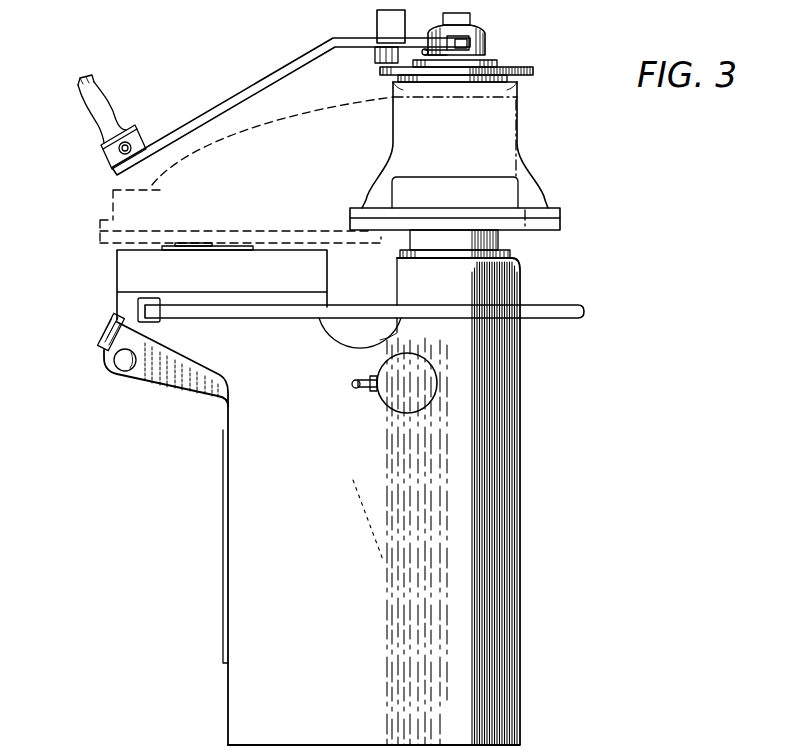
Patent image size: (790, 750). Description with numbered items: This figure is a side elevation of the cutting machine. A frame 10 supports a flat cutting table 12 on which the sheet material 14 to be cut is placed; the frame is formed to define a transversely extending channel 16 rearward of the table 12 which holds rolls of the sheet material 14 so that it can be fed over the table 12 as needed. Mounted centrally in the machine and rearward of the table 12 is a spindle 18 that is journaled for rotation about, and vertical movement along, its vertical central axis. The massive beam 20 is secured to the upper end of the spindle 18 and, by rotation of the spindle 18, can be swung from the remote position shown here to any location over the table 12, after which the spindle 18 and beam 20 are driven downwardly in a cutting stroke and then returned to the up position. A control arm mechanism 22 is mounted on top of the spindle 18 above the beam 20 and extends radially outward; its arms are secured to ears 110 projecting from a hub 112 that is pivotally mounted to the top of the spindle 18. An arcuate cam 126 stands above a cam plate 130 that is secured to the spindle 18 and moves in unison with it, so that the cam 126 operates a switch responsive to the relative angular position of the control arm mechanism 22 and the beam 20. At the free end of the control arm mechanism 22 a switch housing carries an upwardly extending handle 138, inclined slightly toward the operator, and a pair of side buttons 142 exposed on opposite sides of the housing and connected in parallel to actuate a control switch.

The frame 10 is at (500, 557).
The cutting table 12 is at (125, 270).
The sheet material 14 is at (245, 248).
The channel 16 is at (348, 338).
The spindle 18 is at (487, 242).
The beam 20 is at (333, 132).
The control arm mechanism 22 is at (285, 92).
The ears 110 is at (388, 398).
The hub 112 is at (485, 42).
The arcuate cam 126 is at (187, 248).
The cam plate 130 is at (533, 72).
The handle 138 is at (97, 100).
The side buttons 142 is at (116, 155).